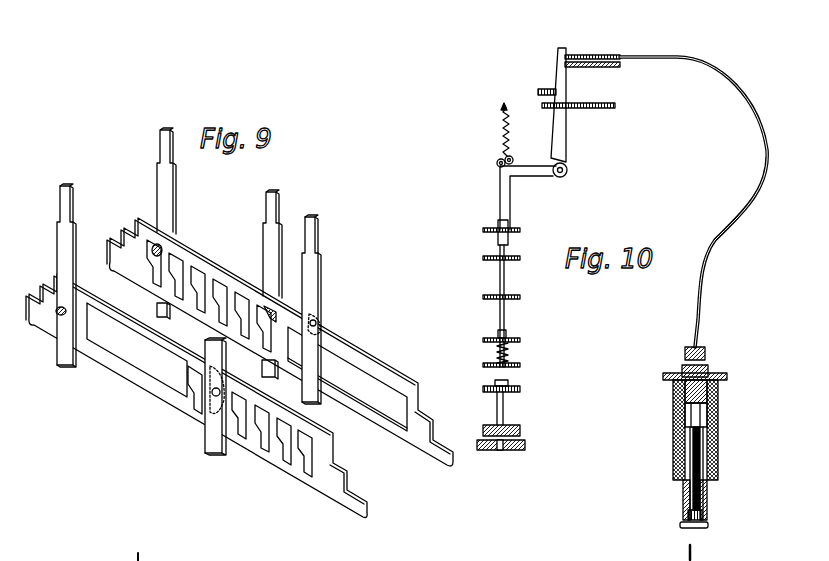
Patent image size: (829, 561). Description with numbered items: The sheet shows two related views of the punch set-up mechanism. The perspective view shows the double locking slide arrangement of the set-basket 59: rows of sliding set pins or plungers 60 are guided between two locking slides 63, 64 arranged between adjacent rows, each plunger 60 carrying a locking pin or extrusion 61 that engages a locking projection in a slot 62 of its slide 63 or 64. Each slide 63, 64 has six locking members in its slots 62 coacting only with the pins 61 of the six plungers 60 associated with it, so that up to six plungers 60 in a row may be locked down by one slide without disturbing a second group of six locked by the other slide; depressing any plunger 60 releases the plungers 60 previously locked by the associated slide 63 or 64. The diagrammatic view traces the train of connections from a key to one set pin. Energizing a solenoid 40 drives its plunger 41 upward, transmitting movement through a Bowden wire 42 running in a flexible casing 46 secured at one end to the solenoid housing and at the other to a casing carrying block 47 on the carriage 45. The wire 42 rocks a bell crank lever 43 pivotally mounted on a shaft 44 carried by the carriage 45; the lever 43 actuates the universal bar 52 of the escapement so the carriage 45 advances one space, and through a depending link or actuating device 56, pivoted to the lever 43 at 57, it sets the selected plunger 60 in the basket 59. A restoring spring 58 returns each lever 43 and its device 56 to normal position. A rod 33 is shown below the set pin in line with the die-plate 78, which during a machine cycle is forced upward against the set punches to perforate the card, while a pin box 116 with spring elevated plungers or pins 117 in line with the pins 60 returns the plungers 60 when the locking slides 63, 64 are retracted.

In FIG. 9, the sliding set pin or plunger 60 is at (60, 245).
In FIG. 10, the sliding set pin or plunger 60 is at (505, 282).
In FIG. 9, the locking pin or extrusion 61 is at (57, 311).
In FIG. 9, the slot 62 is at (172, 292).
In FIG. 9, the locking slide 63 is at (281, 462).
In FIG. 9, the locking slide 64 is at (355, 353).
In FIG. 10, the rod 33 is at (503, 408).
In FIG. 10, the solenoid 40 is at (718, 423).
In FIG. 10, the plunger 41 is at (690, 494).
In FIG. 10, the Bowden wire 42 is at (593, 61).
In FIG. 10, the bell crank lever 43 is at (565, 134).
In FIG. 10, the shaft 44 is at (568, 166).
In FIG. 10, the carriage 45 is at (498, 232).
In FIG. 10, the flexible casing 46 is at (743, 212).
In FIG. 10, the casing carrying block 47 is at (585, 55).
In FIG. 10, the universal bar 52 is at (545, 83).
In FIG. 10, the depending link or actuating device 56 is at (510, 206).
In FIG. 10, the pivot 57 is at (497, 160).
In FIG. 10, the restoring spring 58 is at (510, 140).
In FIG. 10, the set-basket 59 is at (487, 275).
In FIG. 10, the die-plate 78 is at (512, 450).
In FIG. 10, the pin box 116 is at (522, 353).
In FIG. 10, the spring elevated plunger or pin 117 is at (507, 336).